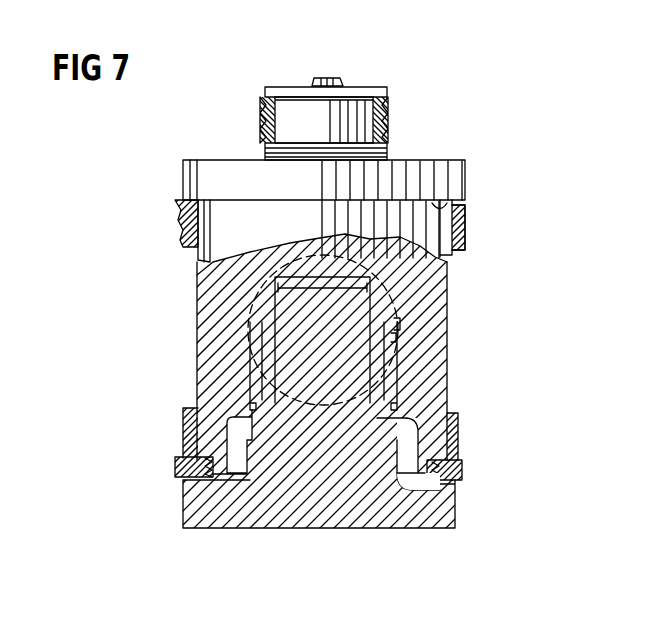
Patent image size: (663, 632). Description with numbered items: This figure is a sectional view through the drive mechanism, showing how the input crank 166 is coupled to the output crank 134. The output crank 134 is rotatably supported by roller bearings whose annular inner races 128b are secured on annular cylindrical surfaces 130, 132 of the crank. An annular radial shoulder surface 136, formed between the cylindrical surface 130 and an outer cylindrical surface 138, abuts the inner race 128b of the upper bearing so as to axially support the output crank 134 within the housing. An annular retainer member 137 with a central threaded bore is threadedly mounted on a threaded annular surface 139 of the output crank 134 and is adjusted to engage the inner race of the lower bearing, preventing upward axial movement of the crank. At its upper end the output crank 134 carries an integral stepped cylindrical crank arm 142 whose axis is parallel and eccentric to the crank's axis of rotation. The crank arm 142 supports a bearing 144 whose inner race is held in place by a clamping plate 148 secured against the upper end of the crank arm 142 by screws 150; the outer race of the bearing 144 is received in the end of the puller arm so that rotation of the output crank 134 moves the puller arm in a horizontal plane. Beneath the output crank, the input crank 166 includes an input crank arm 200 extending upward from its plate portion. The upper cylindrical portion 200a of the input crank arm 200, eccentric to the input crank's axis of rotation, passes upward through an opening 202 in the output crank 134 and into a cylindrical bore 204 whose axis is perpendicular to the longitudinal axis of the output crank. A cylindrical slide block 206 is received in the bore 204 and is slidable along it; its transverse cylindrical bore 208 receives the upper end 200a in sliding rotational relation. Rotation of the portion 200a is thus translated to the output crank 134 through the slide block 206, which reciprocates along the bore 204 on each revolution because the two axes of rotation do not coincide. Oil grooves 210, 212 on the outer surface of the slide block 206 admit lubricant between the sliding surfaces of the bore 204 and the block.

The annular inner race 128b is at (466, 215).
The annular cylindrical surface 130 is at (460, 240).
The annular cylindrical surface 132 is at (458, 432).
The output crank 134 is at (440, 163).
The annular radial shoulder surface 136 is at (468, 203).
The annular retainer member 137 is at (463, 480).
The outer cylindrical surface 138 is at (466, 170).
The threaded annular surface 139 is at (432, 495).
The crank arm 142 is at (386, 118).
The bearing 144 is at (262, 127).
The clamping plate 148 is at (378, 90).
The screws 150 is at (322, 76).
The input crank 166 is at (255, 533).
The input crank arm 200 is at (440, 388).
The upper cylindrical portion 200a is at (367, 316).
The opening 202 is at (250, 405).
The cylindrical bore 204 is at (250, 318).
The cylindrical slide block 206 is at (388, 356).
The transverse cylindrical bore 208 is at (265, 362).
The oil groove 210 is at (400, 325).
The oil groove 212 is at (395, 337).